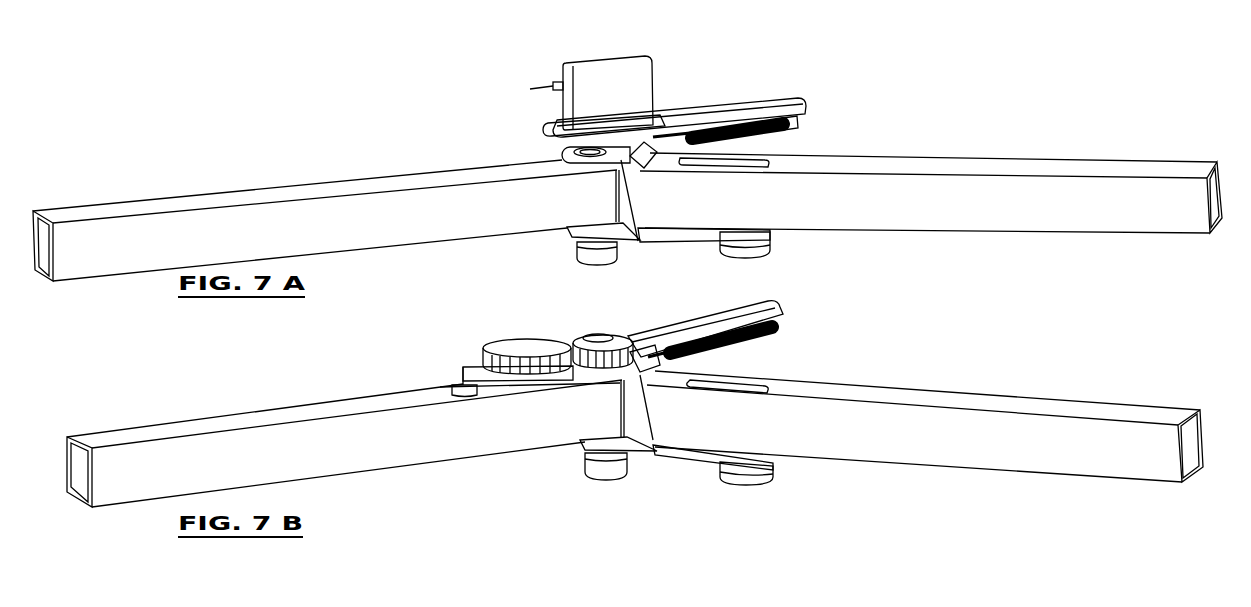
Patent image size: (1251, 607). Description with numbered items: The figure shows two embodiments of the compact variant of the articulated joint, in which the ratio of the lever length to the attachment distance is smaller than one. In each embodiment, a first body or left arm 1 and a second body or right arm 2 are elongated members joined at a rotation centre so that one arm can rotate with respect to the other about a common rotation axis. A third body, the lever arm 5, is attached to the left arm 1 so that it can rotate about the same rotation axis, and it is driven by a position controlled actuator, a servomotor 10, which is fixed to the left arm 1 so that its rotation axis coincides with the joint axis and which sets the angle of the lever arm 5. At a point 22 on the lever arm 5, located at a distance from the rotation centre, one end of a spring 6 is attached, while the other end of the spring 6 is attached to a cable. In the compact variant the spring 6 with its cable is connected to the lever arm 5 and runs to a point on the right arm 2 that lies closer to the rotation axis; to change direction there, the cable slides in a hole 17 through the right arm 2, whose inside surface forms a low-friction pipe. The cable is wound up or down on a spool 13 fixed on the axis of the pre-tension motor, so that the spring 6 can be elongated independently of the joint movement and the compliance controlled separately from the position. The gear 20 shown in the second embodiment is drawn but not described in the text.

In FIG. 7A, the first body 1 is at (120, 253).
In FIG. 7B, the first body 1 is at (148, 457).
In FIG. 7A, the second body 2 is at (1090, 198).
In FIG. 7B, the second body 2 is at (1047, 433).
In FIG. 7A, the lever arm 5 is at (717, 110).
In FIG. 7B, the lever arm 5 is at (785, 313).
In FIG. 7A, the spring 6 is at (797, 130).
In FIG. 7B, the spring 6 is at (745, 338).
In FIG. 7A, the servomotor 10 is at (623, 90).
In FIG. 7A, the spool 13 is at (770, 253).
In FIG. 7B, the spool 13 is at (757, 482).
In FIG. 7A, the hole 17 is at (630, 157).
In FIG. 7B, the hole 17 is at (642, 378).
In FIG. 7B, the gear 20 is at (507, 348).
In FIG. 7A, the point 22 is at (797, 121).